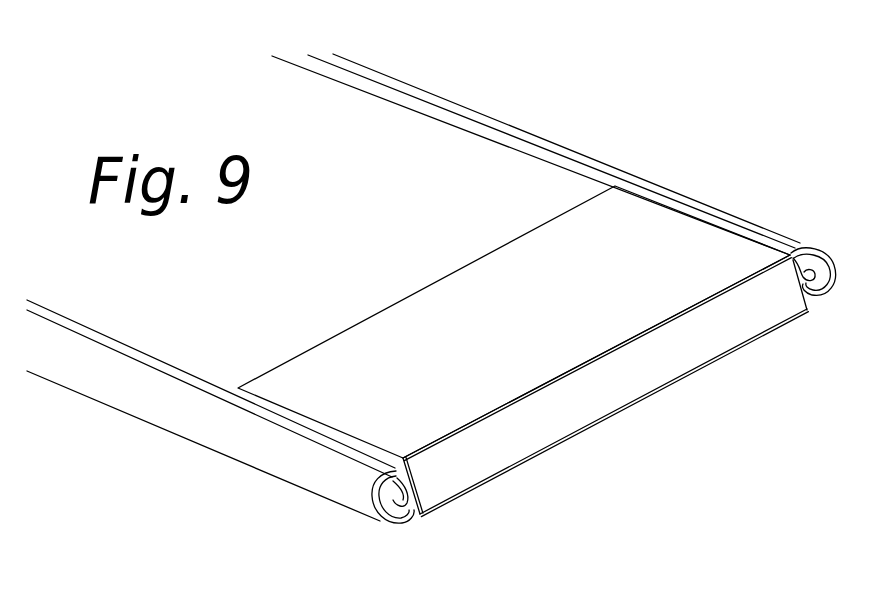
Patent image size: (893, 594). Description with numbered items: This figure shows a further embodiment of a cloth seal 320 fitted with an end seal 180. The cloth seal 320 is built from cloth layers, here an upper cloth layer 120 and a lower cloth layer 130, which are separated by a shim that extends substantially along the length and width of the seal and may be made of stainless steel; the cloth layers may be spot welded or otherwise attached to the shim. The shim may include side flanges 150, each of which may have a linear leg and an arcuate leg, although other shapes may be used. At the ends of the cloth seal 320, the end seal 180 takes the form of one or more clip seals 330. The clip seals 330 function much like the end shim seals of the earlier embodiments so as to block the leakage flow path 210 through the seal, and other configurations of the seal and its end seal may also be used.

The cloth seal 320 is at (545, 83).
The upper cloth layer 120 is at (643, 183).
The clip seal 330 is at (768, 322).
The leakage flow path 210 is at (718, 423).
The end seal 180 is at (540, 470).
The side flange 150 is at (222, 463).
The lower cloth layer 130 is at (405, 512).